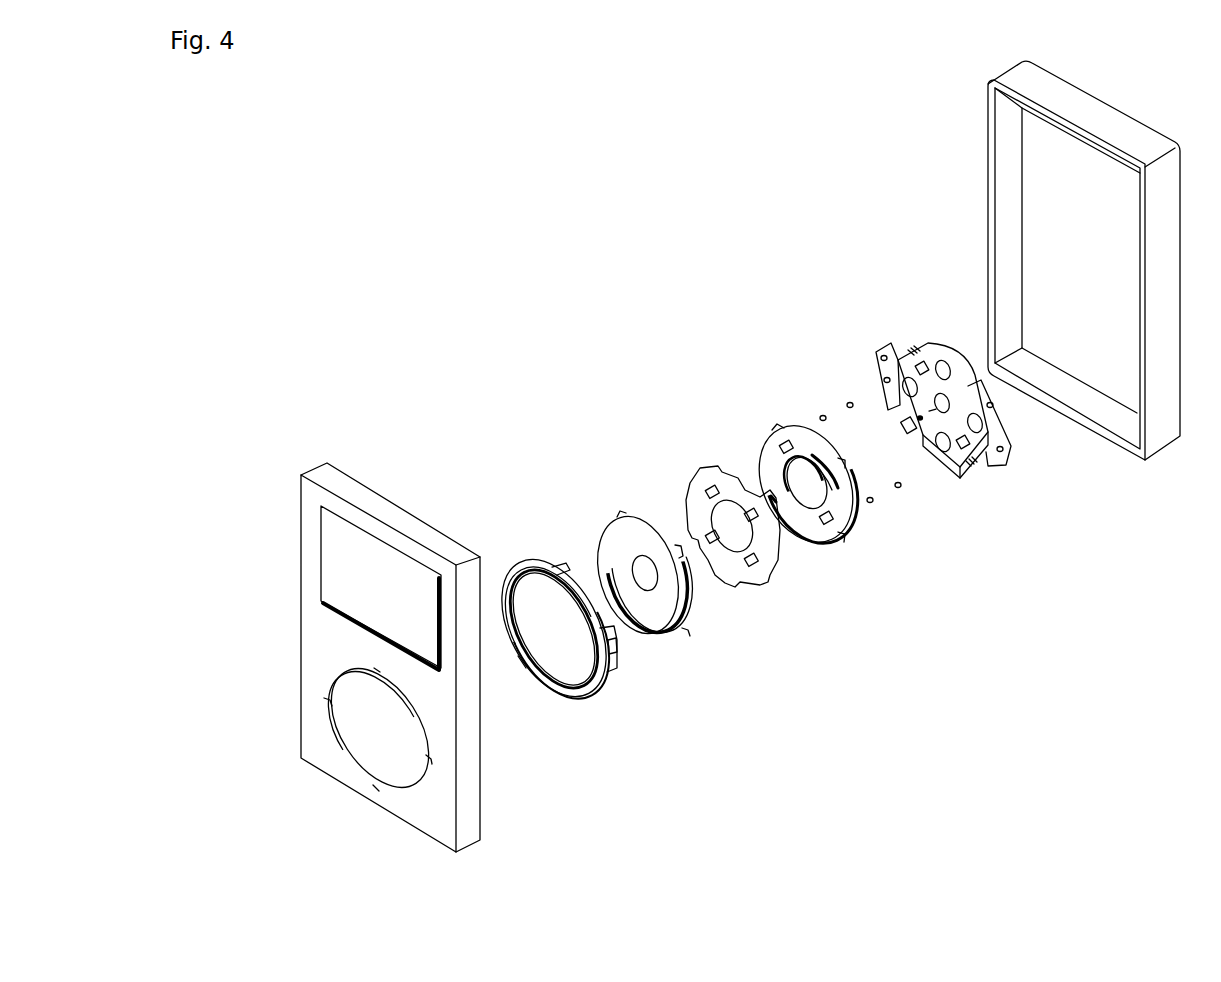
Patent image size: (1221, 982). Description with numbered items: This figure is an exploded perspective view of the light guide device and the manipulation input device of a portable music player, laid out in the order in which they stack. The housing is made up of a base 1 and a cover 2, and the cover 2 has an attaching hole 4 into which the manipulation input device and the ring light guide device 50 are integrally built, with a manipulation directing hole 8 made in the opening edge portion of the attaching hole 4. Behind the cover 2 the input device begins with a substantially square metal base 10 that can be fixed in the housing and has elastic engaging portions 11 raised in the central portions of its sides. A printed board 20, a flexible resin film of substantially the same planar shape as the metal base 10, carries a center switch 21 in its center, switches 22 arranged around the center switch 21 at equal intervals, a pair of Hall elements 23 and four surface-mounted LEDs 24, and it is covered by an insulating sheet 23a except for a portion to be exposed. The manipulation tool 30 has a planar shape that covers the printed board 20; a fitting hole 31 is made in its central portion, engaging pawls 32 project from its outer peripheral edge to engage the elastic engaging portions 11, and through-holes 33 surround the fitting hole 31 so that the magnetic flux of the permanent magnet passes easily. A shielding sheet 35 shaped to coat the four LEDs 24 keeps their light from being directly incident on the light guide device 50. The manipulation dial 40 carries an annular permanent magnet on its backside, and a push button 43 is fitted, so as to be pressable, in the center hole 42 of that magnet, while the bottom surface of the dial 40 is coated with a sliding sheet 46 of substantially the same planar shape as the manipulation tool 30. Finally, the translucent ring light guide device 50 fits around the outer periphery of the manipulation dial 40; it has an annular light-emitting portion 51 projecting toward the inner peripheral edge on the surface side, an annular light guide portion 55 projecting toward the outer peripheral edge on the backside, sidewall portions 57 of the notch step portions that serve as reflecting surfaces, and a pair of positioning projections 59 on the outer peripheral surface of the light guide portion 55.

The base 1 is at (1108, 118).
The cover 2 is at (378, 498).
The attaching hole 4 is at (380, 735).
The manipulation directing hole 8 is at (374, 668).
The metal base 10 is at (916, 435).
The elastic engaging portion 11 is at (903, 423).
The printed board 20 is at (945, 470).
The center switch 21 is at (950, 405).
The switch 22 is at (943, 365).
The Hall element 23 is at (922, 365).
The insulating sheet 23a is at (925, 430).
The LED 24 is at (823, 418).
The manipulation tool 30 is at (770, 458).
The fitting hole 31 is at (807, 495).
The engaging pawl 32 is at (778, 428).
The through-hole 33 is at (787, 447).
The shielding sheet 35 is at (697, 480).
The manipulation dial 40 is at (613, 542).
The center hole 42 is at (646, 545).
The push button 43 is at (647, 587).
The sliding sheet 46 is at (686, 632).
The light guide device 50 is at (518, 568).
The light-emitting portion 51 is at (528, 668).
The light guide portion 55 is at (545, 562).
The sidewall portion 57 is at (610, 690).
The positioning projection 59 is at (620, 648).